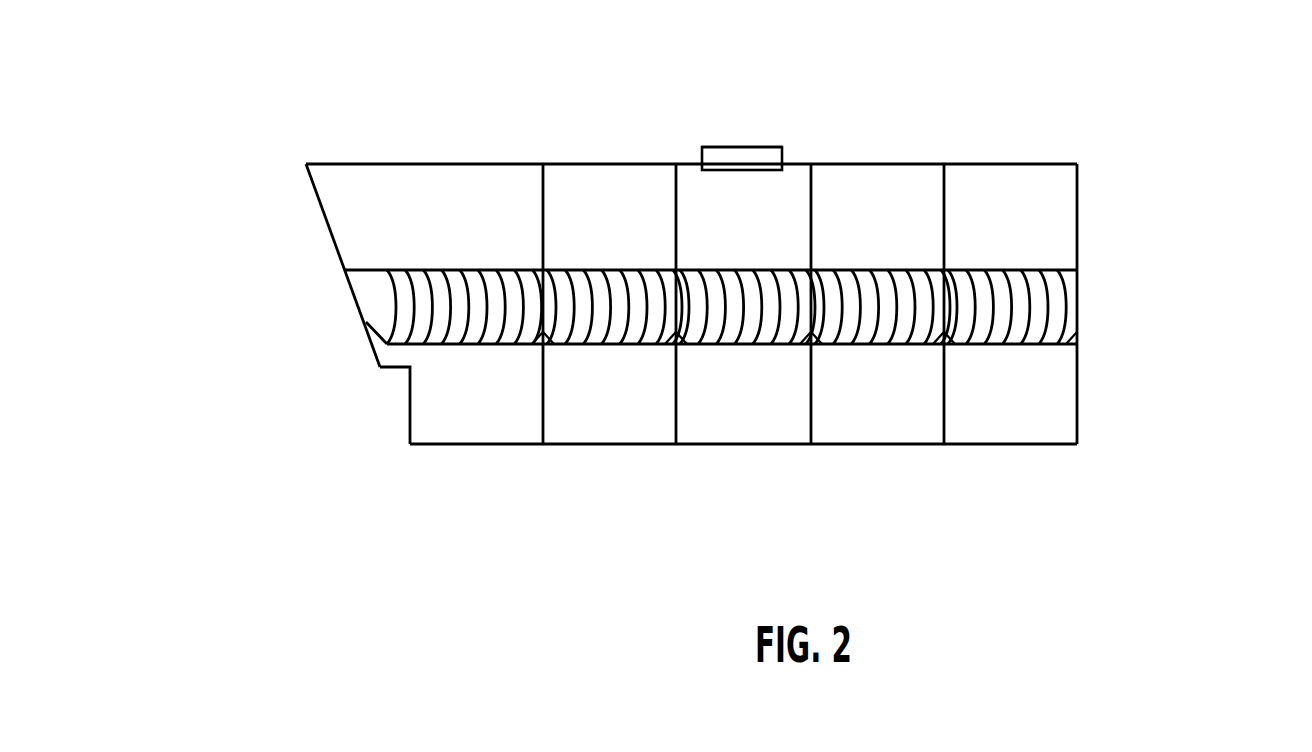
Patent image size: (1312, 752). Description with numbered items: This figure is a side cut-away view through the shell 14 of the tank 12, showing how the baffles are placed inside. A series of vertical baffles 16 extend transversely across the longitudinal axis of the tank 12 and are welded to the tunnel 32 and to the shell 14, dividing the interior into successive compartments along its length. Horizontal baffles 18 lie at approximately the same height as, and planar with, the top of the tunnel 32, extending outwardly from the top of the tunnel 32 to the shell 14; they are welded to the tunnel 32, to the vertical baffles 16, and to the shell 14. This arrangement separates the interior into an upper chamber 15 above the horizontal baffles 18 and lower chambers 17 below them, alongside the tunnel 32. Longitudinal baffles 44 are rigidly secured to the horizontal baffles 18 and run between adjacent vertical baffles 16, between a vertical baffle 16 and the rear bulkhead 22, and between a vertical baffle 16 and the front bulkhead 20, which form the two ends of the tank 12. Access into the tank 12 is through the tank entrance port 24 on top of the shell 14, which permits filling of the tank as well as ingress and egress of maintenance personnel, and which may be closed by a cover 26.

The tank 12 is at (752, 303).
The shell 14 is at (1042, 163).
The upper chamber 15 is at (370, 203).
The vertical baffles 16 is at (541, 218).
The lower chambers 17 is at (432, 395).
The horizontal baffles 18 is at (482, 345).
The front bulkhead 20 is at (333, 240).
The rear bulkhead 22 is at (1078, 225).
The tank entrance port 24 is at (783, 162).
The cover 26 is at (716, 147).
The tunnel 32 is at (1042, 408).
The longitudinal baffles 44 is at (779, 405).